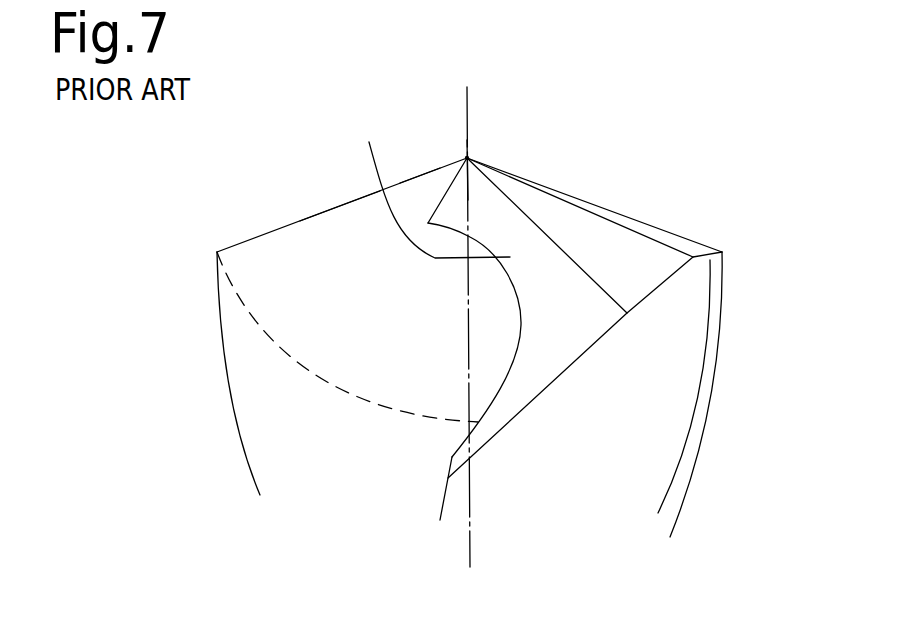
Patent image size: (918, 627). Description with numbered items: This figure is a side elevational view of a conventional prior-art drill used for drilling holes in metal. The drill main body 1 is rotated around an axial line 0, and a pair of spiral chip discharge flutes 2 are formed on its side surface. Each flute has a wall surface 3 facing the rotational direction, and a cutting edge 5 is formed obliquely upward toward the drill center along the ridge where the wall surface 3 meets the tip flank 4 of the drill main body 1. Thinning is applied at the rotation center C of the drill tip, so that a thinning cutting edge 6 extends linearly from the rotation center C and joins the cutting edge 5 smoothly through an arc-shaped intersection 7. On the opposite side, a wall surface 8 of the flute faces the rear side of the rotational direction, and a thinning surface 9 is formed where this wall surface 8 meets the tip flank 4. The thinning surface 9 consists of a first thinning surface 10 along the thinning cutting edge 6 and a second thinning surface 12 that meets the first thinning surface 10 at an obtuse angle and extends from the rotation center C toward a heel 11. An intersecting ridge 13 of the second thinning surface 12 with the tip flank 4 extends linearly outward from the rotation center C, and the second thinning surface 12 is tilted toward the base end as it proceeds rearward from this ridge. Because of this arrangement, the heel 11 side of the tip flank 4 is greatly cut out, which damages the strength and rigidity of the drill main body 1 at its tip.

The axial line 0 is at (474, 527).
The drill main body 1 is at (714, 427).
The chip discharge flute 2 is at (282, 433).
The wall surface 3 is at (262, 357).
The tip flank 4 is at (620, 250).
The cutting edge 5 is at (313, 213).
The thinning cutting edge 6 is at (458, 176).
The arc-shaped intersection 7 is at (426, 218).
The wall surface 8 is at (508, 366).
The thinning surface 9 is at (363, 71).
The first thinning surface 10 is at (433, 183).
The heel 11 is at (443, 500).
The second thinning surface 12 is at (422, 181).
The intersecting ridge 13 is at (536, 224).
The rotation center C is at (474, 156).